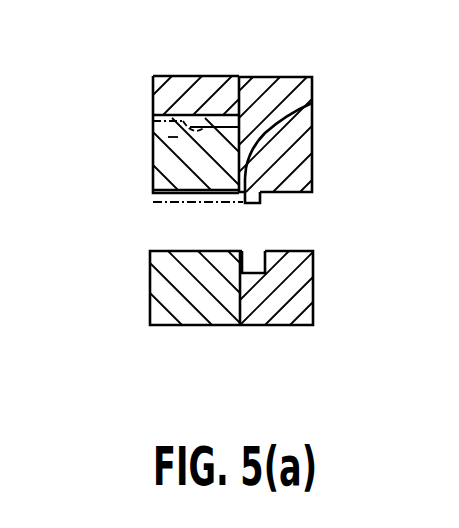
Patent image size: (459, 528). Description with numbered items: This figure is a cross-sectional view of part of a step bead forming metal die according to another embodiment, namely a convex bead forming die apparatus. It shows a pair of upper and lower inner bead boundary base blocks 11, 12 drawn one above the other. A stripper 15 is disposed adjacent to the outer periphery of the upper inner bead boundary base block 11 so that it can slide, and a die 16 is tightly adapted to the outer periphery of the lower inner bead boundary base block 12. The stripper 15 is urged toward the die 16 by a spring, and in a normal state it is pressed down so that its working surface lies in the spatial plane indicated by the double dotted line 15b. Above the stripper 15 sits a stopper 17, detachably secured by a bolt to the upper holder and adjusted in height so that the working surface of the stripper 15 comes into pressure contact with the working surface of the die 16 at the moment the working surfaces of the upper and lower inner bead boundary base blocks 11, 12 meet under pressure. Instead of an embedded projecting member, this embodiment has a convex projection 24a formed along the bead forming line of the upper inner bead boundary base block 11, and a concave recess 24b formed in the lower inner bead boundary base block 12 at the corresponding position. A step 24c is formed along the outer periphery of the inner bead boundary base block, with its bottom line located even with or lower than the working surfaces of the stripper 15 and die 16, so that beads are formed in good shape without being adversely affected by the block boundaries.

The upper inner bead boundary base block 11 is at (260, 90).
The lower inner bead boundary base block 12 is at (300, 282).
The stripper 15 is at (152, 162).
The double dotted line 15b is at (150, 136).
The die 16 is at (170, 282).
The stopper 17 is at (153, 98).
The convex projection 24a is at (253, 203).
The concave recess 24b is at (253, 260).
The step 24c is at (313, 101).